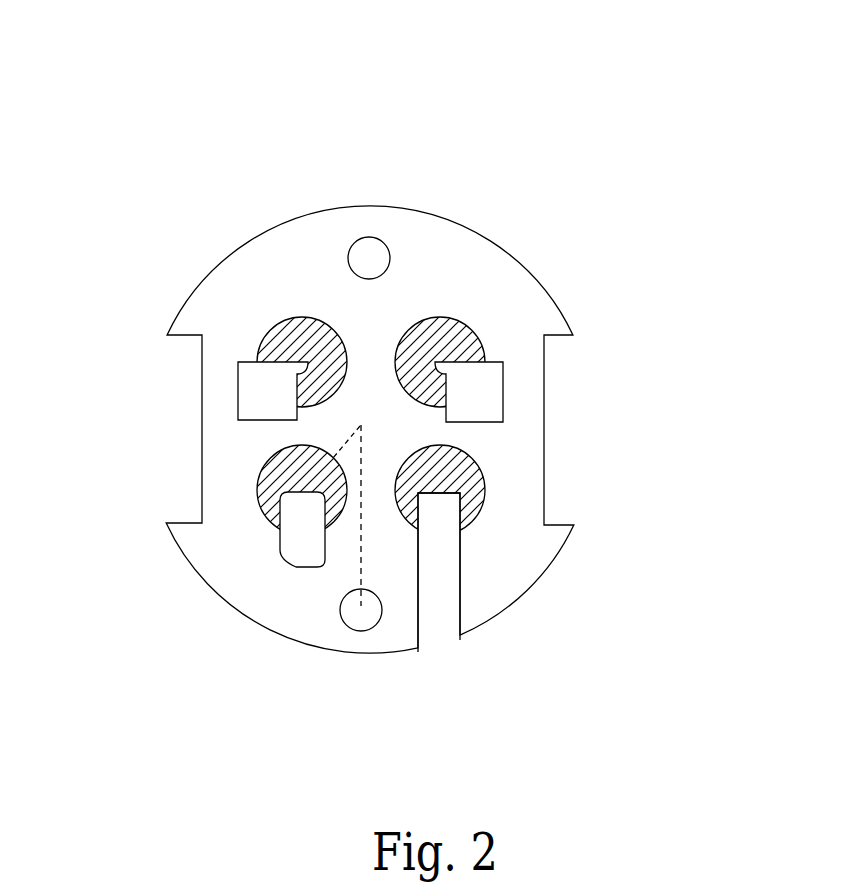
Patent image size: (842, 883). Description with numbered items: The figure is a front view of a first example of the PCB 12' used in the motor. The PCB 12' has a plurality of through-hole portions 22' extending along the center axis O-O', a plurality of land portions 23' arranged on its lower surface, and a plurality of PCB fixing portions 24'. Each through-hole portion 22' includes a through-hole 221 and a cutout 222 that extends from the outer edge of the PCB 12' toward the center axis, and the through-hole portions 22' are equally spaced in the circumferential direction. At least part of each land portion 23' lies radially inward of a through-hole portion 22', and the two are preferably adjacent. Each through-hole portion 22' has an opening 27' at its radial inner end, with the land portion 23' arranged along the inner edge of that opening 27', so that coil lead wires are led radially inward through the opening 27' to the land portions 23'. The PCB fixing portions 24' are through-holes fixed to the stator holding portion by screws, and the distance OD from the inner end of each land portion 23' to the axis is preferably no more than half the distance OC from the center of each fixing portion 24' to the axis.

The PCB 12' is at (408, 329).
The land portion 23' is at (206, 291).
The PCB fixing portion 24' is at (284, 205).
The opening 27' is at (521, 335).
The through-hole portion 22' is at (585, 500).
The through-hole 221 is at (478, 389).
The cutout 222 is at (433, 572).